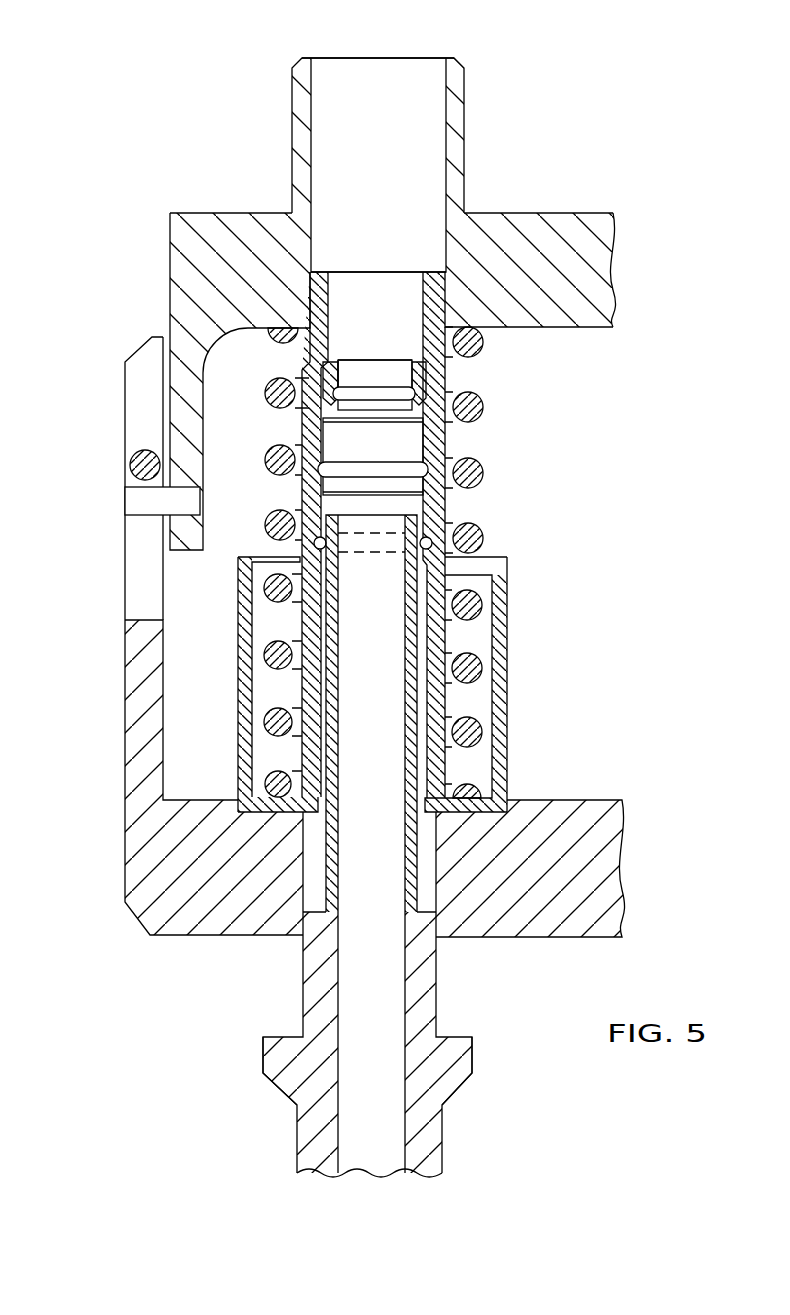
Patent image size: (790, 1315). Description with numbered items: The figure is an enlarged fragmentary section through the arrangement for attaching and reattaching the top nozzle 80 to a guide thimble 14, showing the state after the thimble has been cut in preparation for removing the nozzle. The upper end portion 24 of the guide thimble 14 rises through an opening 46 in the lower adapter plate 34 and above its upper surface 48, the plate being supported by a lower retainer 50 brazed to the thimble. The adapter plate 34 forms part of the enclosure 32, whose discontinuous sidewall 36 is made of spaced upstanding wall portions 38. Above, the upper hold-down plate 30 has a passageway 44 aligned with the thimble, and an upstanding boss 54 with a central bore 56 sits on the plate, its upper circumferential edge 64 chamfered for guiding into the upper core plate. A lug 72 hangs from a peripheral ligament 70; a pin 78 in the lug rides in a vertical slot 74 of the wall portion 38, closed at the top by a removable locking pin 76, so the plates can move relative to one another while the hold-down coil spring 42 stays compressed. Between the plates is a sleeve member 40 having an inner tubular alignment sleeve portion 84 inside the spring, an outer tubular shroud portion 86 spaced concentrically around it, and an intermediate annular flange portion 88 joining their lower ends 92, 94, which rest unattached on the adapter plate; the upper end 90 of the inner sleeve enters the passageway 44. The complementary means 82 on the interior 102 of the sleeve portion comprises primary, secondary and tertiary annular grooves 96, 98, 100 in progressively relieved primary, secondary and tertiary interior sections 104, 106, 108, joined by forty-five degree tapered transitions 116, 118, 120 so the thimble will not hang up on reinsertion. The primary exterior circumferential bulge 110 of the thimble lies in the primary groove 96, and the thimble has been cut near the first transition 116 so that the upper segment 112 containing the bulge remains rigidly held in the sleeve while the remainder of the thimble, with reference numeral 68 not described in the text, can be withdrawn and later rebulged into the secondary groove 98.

The guide thimble 14 is at (443, 1147).
The upper end portion 24 is at (402, 843).
The upper hold-down plate 30 is at (616, 280).
The enclosure 32 is at (123, 738).
The lower adapter plate 34 is at (123, 870).
The discontinuous sidewall 36 is at (125, 412).
The upstanding wall portion 38 is at (125, 688).
The sleeve member 40 is at (308, 279).
The hold-down coil spring 42 is at (484, 470).
The passageway 44 is at (446, 296).
The opening 46 is at (318, 833).
The upper surface 48 is at (587, 800).
The lower retainer 50 is at (458, 1090).
The upstanding boss 54 is at (465, 108).
The central bore 56 is at (446, 90).
The upper circumferential edge 64 is at (301, 60).
The upper body block 68 is at (240, 230).
The ligament 70 is at (548, 213).
The lug 72 is at (183, 350).
The vertical slot 74 is at (135, 573).
The locking pin 76 is at (130, 465).
The pin 78 is at (133, 505).
The arrangement for attaching and reattaching the top nozzle 80 is at (508, 645).
The complementary means 82 is at (409, 337).
The inner tubular alignment sleeve portion 84 is at (447, 502).
The outer tubular shroud portion 86 is at (238, 607).
The intermediate annular flange portion 88 is at (270, 815).
The upper end 90 is at (443, 298).
The lower end 92 is at (447, 787).
The lower end 94 is at (237, 793).
The primary annular groove 96 is at (368, 367).
The secondary annular groove 98 is at (380, 472).
The tertiary annular groove 100 is at (422, 540).
The interior 102 is at (427, 700).
The primary interior section 104 is at (447, 373).
The secondary interior section 106 is at (444, 455).
The tertiary interior section 108 is at (503, 565).
The primary exterior circumferential bulge 110 is at (380, 385).
The upper segment 112 is at (355, 362).
The first tapered transition 116 is at (323, 414).
The second tapered transition 118 is at (301, 488).
The third tapered transition 120 is at (315, 557).